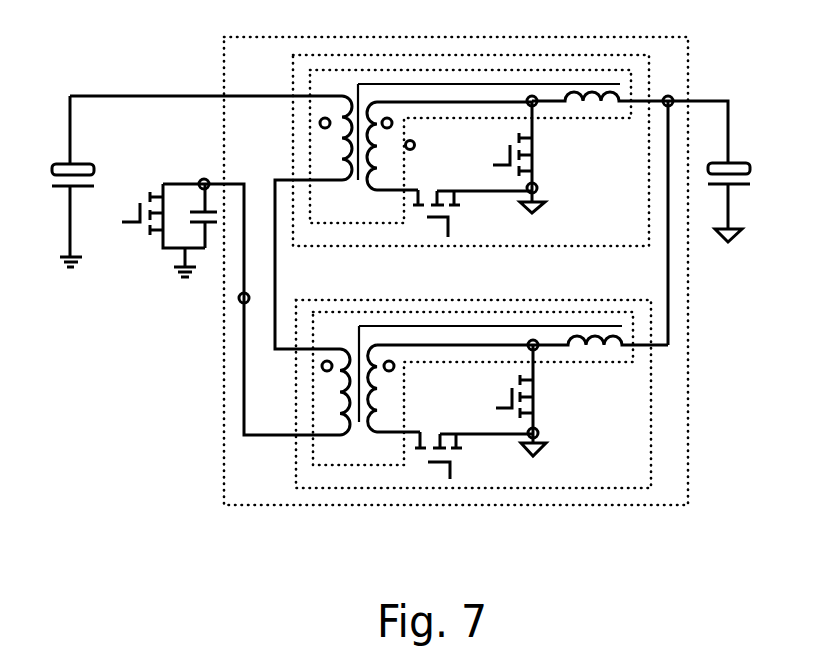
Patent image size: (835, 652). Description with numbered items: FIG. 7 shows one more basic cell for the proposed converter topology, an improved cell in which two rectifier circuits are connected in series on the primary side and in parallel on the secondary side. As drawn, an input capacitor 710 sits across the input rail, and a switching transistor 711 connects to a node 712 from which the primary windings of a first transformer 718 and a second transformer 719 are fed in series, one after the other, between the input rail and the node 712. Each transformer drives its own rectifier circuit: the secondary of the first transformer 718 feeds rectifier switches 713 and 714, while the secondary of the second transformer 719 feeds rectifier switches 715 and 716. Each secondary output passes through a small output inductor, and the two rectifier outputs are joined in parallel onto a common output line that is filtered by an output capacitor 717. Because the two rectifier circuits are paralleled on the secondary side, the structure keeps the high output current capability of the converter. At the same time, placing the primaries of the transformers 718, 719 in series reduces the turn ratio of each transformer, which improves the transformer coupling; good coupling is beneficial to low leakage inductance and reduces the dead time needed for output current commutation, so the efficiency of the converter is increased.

The input capacitor 710 is at (51, 181).
The input switch transistor 711 is at (156, 230).
The intermediate node 712 is at (256, 294).
The synchronous rectifier switch 713 is at (469, 189).
The synchronous rectifier switch 714 is at (507, 154).
The synchronous rectifier switch 715 is at (474, 433).
The synchronous rectifier switch 716 is at (506, 398).
The output capacitor 717 is at (721, 186).
The first transformer 718 is at (305, 97).
The second transformer 719 is at (312, 407).